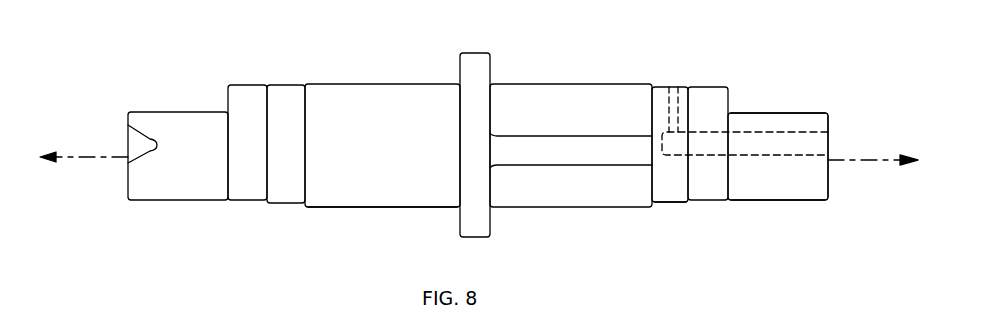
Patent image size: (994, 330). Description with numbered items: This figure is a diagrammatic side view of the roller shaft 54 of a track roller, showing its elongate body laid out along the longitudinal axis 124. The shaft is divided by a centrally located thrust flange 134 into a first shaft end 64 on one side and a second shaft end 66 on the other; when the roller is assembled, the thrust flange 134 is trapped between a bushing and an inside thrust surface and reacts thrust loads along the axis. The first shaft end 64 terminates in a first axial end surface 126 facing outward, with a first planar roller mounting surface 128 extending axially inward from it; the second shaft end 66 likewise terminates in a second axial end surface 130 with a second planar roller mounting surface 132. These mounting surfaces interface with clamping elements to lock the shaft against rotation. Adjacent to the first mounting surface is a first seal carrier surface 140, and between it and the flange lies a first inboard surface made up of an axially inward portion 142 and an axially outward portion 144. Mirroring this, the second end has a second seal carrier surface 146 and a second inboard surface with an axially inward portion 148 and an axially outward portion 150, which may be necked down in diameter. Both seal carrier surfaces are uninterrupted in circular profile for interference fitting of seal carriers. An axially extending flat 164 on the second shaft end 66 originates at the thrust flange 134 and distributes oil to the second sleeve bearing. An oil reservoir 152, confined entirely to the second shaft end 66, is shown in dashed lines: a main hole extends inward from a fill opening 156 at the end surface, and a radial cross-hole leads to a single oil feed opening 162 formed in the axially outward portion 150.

The roller shaft 54 is at (767, 58).
The first shaft end 64 is at (321, 211).
The second shaft end 66 is at (641, 211).
The longitudinal axis 124 is at (872, 162).
The first axial end surface 126 is at (128, 194).
The first planar roller mounting surface 128 is at (158, 112).
The second axial end surface 130 is at (830, 202).
The second planar roller mounting surface 132 is at (793, 113).
The thrust flange 134 is at (474, 53).
The first seal carrier surface 140 is at (252, 85).
The axially inward portion of first inboard surface 142 is at (422, 84).
The axially outward portion of first inboard surface 144 is at (276, 203).
The second seal carrier surface 146 is at (718, 87).
The axially inward portion of second inboard surface 148 is at (527, 207).
The axially outward portion of second inboard surface 150 is at (672, 203).
The oil reservoir 152 is at (753, 164).
The fill opening 156 is at (828, 136).
The oil feed opening 162 is at (670, 87).
The flat 164 is at (556, 136).